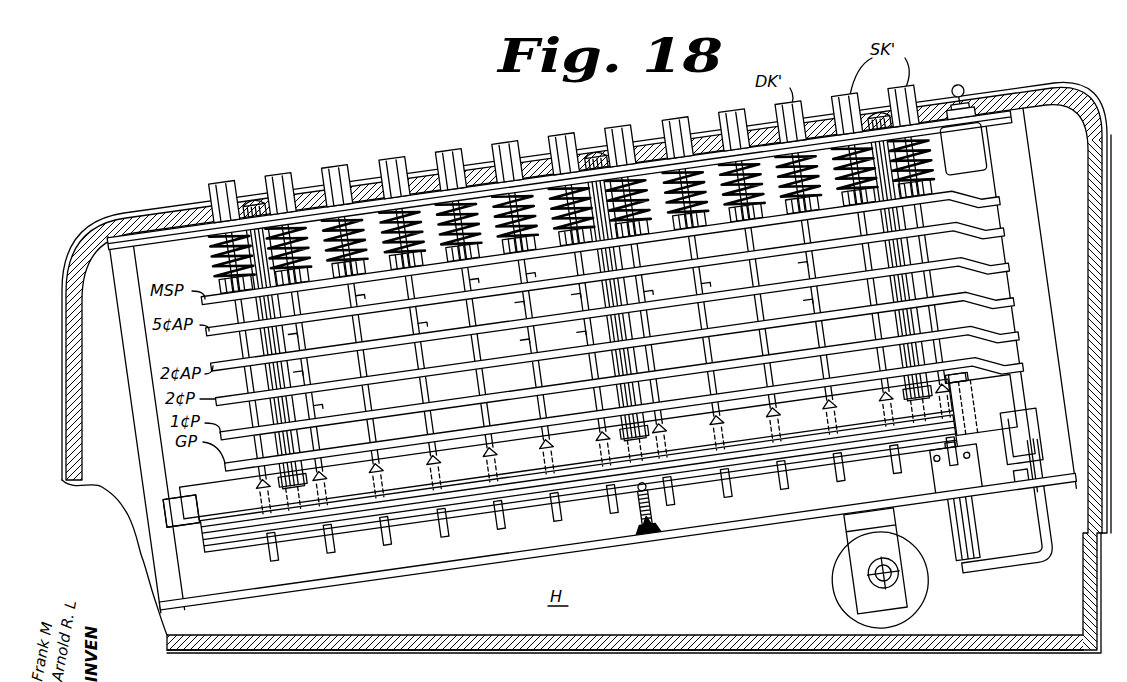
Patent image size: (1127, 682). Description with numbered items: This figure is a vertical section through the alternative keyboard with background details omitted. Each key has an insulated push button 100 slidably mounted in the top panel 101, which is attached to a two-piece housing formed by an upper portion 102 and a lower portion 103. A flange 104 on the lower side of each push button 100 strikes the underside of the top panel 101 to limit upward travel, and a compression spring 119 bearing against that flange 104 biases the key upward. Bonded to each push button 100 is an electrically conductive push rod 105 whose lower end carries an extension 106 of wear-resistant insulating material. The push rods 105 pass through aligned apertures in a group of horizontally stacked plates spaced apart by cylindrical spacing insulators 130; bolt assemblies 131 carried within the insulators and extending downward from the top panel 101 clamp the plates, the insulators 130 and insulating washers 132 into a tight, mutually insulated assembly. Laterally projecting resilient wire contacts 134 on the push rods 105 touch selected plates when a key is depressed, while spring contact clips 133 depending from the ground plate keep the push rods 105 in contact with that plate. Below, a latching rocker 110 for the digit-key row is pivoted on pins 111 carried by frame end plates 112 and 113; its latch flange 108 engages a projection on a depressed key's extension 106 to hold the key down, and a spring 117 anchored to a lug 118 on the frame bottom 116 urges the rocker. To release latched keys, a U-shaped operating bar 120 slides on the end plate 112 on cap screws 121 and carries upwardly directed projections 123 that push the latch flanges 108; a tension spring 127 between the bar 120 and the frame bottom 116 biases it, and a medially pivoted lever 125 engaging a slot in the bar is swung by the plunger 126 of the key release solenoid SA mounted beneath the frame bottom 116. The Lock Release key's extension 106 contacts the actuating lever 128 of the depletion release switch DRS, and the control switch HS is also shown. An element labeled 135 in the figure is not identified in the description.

The push button 100 is at (280, 178).
The top panel 101 is at (183, 228).
The upper portion 102 is at (62, 287).
The lower portion 103 is at (290, 652).
The flange 104 is at (395, 208).
The push rod 105 is at (238, 350).
The extension 106 is at (328, 547).
The latch flange 108 is at (246, 556).
The latching rocker 110 is at (217, 496).
The pins 111 is at (165, 508).
The frame end plate 112 is at (1030, 211).
The frame end plate 113 is at (136, 434).
The frame bottom 116 is at (447, 563).
The spring 117 is at (651, 511).
The lug 118 is at (661, 540).
The compression spring 119 is at (222, 257).
The operating bar 120 is at (1036, 482).
The cap screws 121 is at (1040, 415).
The projections 123 is at (984, 404).
The lever 125 is at (1031, 525).
The plunger 126 is at (870, 573).
The tension spring 127 is at (1020, 477).
The actuating lever 128 is at (964, 383).
The spacing insulators 130 is at (818, 301).
The bolt assemblies 131 is at (268, 212).
The insulating washers 132 is at (912, 396).
The spring contact clips 133 is at (780, 412).
The wire contacts 134 is at (320, 406).
The spring collars 135 is at (233, 299).
The key release solenoid SA is at (838, 604).
The control switch HS is at (962, 91).
The depletion release switch DRS is at (940, 470).